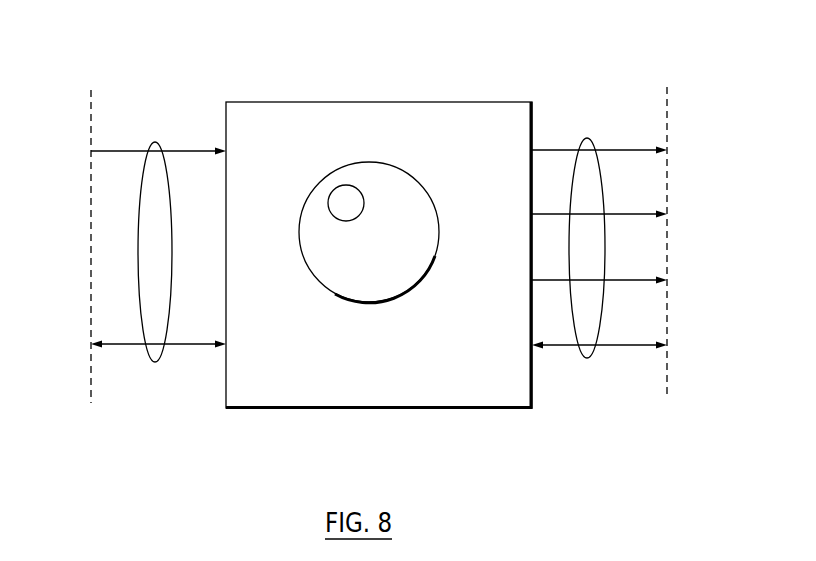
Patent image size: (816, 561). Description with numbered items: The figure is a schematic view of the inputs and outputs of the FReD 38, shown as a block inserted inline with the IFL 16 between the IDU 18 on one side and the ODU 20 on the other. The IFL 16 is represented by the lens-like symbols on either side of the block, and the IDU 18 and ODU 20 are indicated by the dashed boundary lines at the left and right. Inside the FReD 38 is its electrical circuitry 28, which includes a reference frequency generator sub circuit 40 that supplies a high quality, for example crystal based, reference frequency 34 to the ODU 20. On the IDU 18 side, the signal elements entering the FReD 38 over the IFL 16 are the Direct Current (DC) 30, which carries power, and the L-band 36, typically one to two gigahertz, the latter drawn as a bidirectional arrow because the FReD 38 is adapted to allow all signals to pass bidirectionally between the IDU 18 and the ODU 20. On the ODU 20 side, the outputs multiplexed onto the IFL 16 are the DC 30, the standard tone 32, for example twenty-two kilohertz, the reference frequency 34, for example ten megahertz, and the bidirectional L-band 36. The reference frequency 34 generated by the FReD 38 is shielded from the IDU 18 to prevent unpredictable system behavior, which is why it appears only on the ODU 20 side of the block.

The IFL 16 is at (154, 142).
The IDU 18 is at (72, 122).
The ODU 20 is at (700, 117).
The electronic circuitry 28 is at (400, 167).
The Direct Current (DC) 30 is at (379, 151).
The standard tone 32 is at (581, 213).
The reference frequency 34 is at (581, 280).
The L-band 36 is at (379, 345).
The FReD 38 is at (365, 377).
The reference frequency generator sub circuit 40 is at (345, 192).